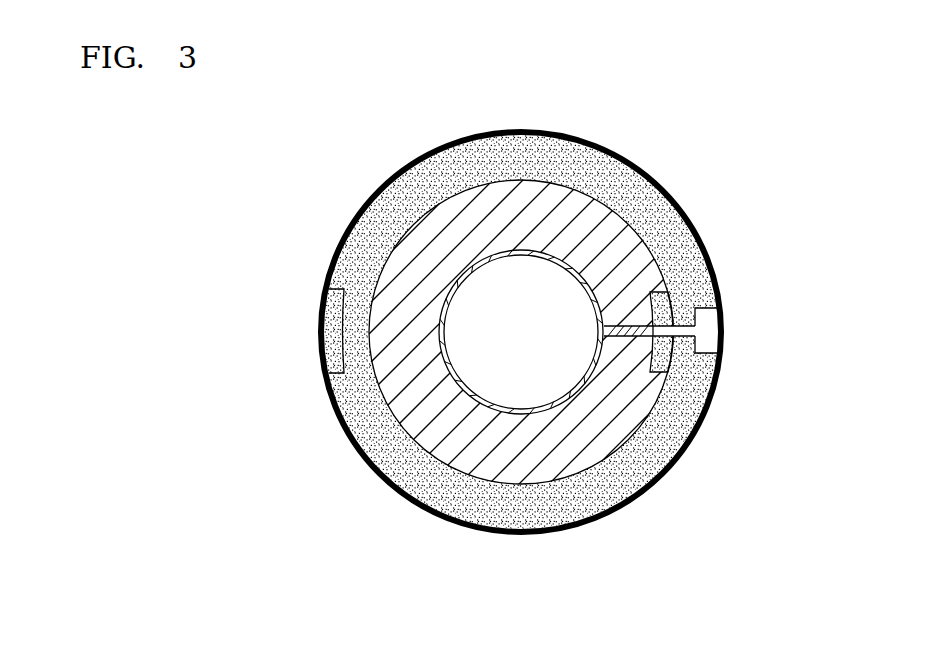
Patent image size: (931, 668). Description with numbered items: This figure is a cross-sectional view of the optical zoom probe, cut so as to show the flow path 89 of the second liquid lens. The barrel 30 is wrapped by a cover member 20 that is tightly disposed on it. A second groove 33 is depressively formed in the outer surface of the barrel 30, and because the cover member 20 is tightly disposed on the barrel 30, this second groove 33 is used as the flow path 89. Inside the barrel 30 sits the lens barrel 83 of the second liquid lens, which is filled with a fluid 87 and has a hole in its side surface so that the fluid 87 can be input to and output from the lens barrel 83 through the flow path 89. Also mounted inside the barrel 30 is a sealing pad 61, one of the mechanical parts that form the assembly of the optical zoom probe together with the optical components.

The cover member 20 is at (716, 262).
The barrel 30 is at (520, 513).
The second groove 33 is at (706, 312).
The flow path 89 is at (712, 343).
The sealing pad 61 is at (323, 340).
The fluid 87 is at (534, 343).
The lens barrel 83 is at (533, 464).